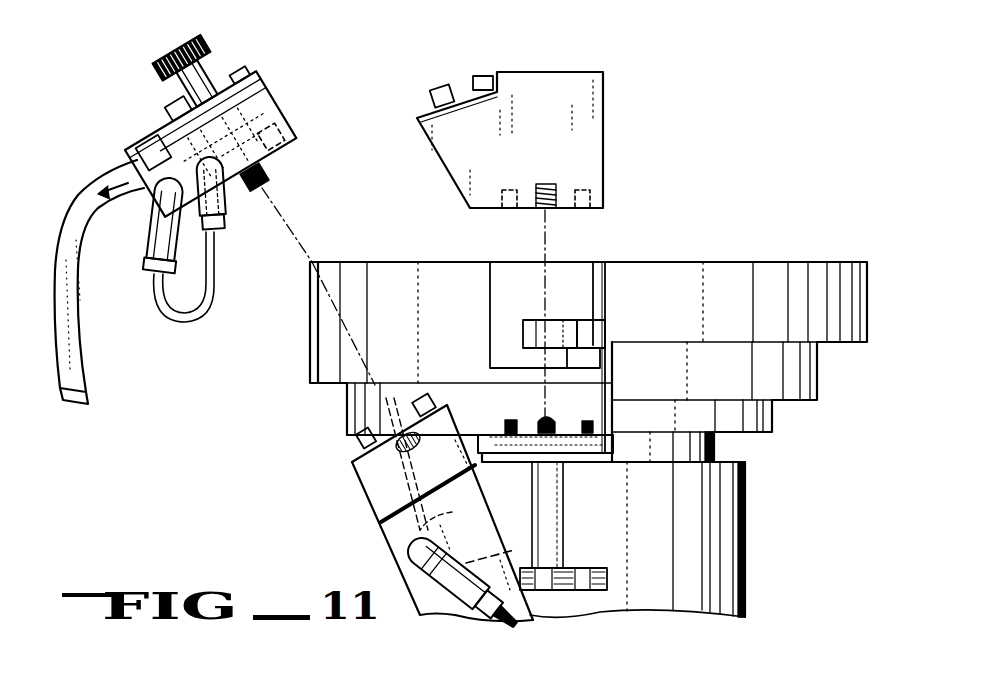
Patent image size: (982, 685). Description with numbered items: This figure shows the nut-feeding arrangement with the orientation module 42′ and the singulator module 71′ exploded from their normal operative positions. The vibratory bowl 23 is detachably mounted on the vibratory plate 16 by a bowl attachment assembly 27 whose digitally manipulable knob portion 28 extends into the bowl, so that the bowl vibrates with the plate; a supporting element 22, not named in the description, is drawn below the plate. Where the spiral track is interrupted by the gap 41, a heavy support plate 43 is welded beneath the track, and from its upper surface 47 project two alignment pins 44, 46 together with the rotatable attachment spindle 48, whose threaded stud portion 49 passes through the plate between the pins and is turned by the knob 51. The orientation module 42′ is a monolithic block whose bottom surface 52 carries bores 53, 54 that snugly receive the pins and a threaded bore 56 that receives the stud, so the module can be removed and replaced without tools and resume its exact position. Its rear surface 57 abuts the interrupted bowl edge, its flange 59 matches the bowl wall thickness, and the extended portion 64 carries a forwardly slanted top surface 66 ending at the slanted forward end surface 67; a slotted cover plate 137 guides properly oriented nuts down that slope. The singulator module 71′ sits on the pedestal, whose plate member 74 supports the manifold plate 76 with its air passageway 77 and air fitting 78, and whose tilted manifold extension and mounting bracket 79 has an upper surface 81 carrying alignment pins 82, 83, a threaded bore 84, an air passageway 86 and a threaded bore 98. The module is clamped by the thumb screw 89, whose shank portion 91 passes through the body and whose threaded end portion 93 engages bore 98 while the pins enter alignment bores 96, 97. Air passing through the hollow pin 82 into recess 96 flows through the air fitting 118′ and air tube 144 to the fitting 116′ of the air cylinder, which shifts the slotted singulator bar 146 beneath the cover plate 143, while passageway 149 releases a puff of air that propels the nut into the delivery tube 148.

The singulator module 71′ is at (276, 70).
The thumb screw 89 is at (207, 47).
The shank portion 91 is at (212, 76).
The passageway 149 is at (188, 102).
The singulator cover plate 143 is at (168, 114).
The slotted singulator bar 146 is at (138, 145).
The alignment bore 97 is at (282, 126).
The threaded end portion 93 is at (266, 177).
The alignment bore 96 is at (250, 210).
The fitting 116′ is at (168, 228).
The air fitting 118′ is at (224, 215).
The air line or tube 144 is at (214, 312).
The delivery tube 148 is at (80, 326).
The orientation module 42′ is at (628, 88).
The cover plate 137 is at (470, 88).
The top surface 66 is at (434, 104).
The flange 59 is at (543, 78).
The rear surface 57 is at (606, 128).
The extended portion 64 is at (438, 144).
The forward end surface 67 is at (452, 180).
The bottom surface 52 is at (485, 210).
The bore 53 is at (515, 190).
The bore 54 is at (582, 190).
The threaded bore 56 is at (540, 212).
The vibratory bowl 23 is at (647, 257).
The gap 41 is at (598, 270).
The knob portion 28 is at (522, 325).
The bowl attachment assembly 27 is at (585, 315).
The vibratory plate 16 is at (718, 448).
The column 22 is at (748, 528).
The support plate 43 is at (506, 455).
The alignment pin 44 is at (515, 413).
The threaded stud portion 49 is at (553, 420).
The alignment pin 46 is at (588, 423).
The upper surface 47 is at (563, 436).
The orientation module attachment spindle 48 is at (558, 534).
The knob 51 is at (603, 572).
The manifold extension and mounting bracket 79 is at (380, 504).
The threaded bore 98 is at (407, 457).
The alignment pin 83 is at (432, 396).
The alignment pin 82 is at (358, 438).
The upper surface 81 is at (354, 462).
The air passageway 86 is at (384, 478).
The threaded bore 84 is at (410, 452).
The air passageway 77 is at (448, 517).
The manifold plate 76 is at (398, 534).
The air fitting 78 is at (425, 562).
The plate member 74 is at (512, 594).